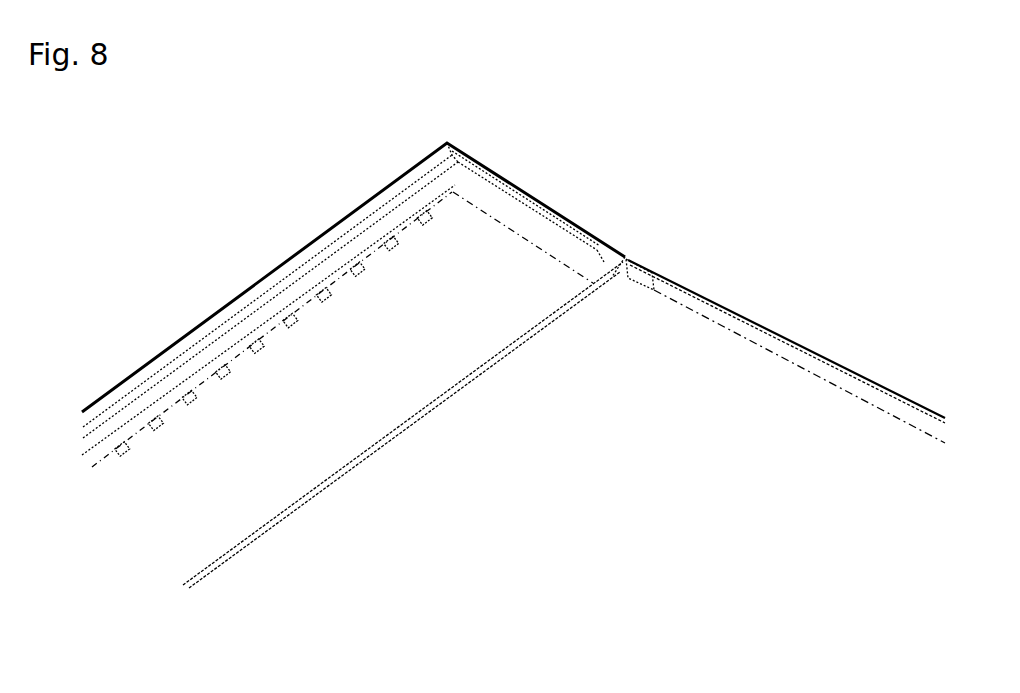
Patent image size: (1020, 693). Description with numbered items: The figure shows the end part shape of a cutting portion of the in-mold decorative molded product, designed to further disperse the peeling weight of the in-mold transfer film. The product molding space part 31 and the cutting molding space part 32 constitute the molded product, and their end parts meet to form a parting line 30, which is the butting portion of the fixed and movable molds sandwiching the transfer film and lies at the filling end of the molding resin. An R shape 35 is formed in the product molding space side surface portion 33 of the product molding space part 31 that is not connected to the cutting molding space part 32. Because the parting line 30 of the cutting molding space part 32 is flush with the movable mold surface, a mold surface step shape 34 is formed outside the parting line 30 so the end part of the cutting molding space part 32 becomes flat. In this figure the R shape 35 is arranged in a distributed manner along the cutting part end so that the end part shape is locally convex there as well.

The parting line 30 is at (544, 249).
The product molding space part 31 is at (610, 490).
The cutting molding space part 32 is at (398, 373).
The product molding space side surface portion 33 is at (701, 305).
The mold surface step shape 34 is at (477, 158).
The R shape 35 is at (322, 296).